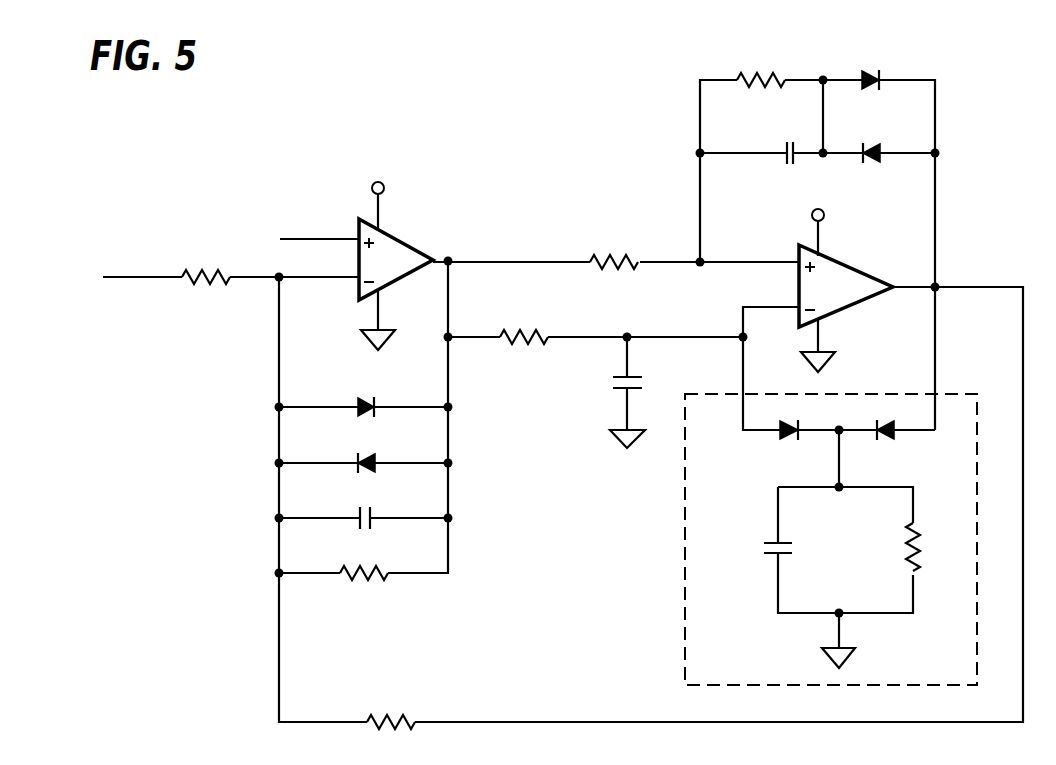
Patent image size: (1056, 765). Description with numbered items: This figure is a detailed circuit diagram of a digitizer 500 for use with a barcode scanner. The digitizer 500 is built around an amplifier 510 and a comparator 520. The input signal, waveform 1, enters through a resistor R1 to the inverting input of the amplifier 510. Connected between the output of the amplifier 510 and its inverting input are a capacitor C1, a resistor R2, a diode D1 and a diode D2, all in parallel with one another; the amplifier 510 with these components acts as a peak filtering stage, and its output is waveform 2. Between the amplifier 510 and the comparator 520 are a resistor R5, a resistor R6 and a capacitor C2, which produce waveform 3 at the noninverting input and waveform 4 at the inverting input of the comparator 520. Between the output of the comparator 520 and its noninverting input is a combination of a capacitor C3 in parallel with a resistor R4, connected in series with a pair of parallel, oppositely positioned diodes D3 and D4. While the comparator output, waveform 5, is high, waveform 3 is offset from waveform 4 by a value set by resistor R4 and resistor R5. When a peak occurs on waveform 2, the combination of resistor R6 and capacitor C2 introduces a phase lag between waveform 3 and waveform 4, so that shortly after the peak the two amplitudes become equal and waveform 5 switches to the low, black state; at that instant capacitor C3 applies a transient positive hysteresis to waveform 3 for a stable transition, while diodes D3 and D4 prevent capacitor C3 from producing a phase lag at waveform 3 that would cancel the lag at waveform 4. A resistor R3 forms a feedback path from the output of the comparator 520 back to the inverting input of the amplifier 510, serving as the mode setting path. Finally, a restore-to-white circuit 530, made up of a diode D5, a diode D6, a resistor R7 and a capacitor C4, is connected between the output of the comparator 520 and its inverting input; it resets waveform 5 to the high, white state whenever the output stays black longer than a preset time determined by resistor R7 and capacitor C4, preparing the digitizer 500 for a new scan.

The digitizer 500 is at (530, 73).
The amplifier 510 is at (405, 245).
The comparator 520 is at (853, 268).
The restore-to-white circuit 530 is at (685, 503).
The waveform 1 is at (138, 278).
The waveform 2 is at (478, 260).
The waveform 3 is at (718, 262).
The waveform 4 is at (660, 337).
The waveform 5 is at (937, 284).
The resistor R1 is at (206, 257).
The resistor R2 is at (364, 591).
The resistor R3 is at (391, 702).
The resistor R4 is at (761, 62).
The resistor R5 is at (614, 243).
The resistor R6 is at (524, 317).
The resistor R7 is at (893, 548).
The capacitor C1 is at (363, 507).
The capacitor C2 is at (614, 406).
The capacitor C3 is at (772, 165).
The capacitor C4 is at (760, 550).
The diode D1 is at (363, 395).
The diode D2 is at (363, 451).
The diode D3 is at (888, 66).
The diode D4 is at (888, 141).
The diode D5 is at (785, 450).
The diode D6 is at (883, 450).